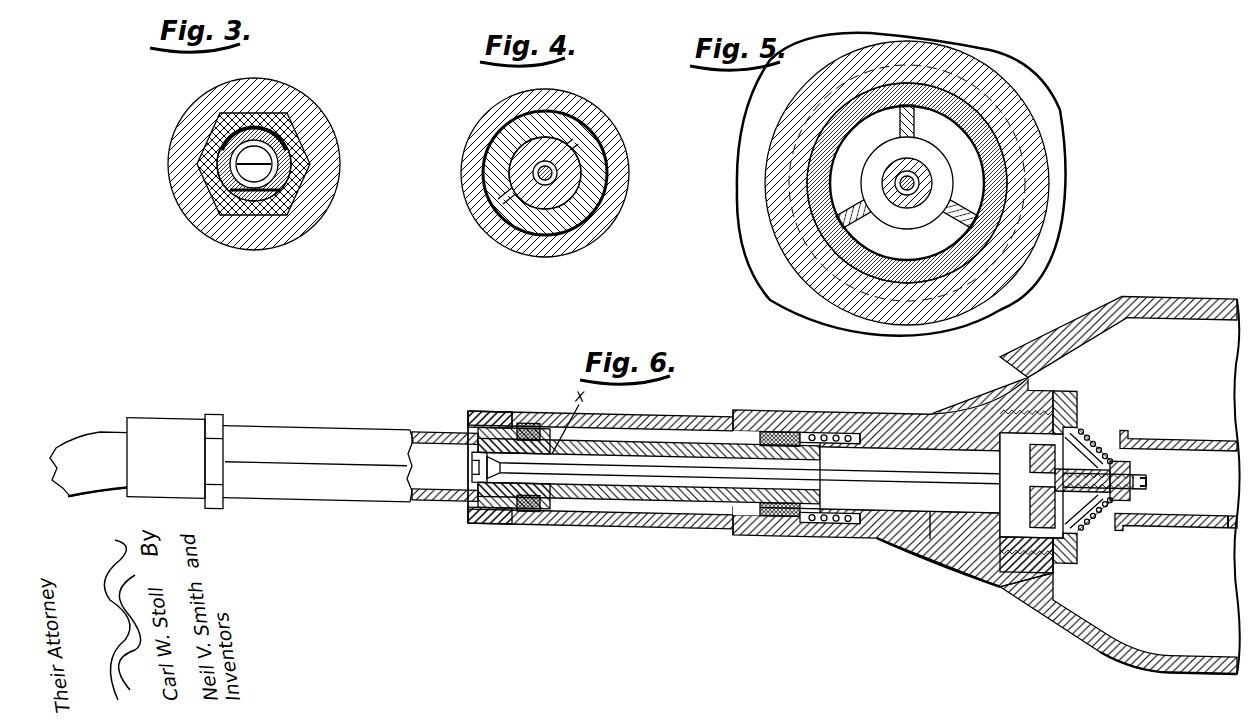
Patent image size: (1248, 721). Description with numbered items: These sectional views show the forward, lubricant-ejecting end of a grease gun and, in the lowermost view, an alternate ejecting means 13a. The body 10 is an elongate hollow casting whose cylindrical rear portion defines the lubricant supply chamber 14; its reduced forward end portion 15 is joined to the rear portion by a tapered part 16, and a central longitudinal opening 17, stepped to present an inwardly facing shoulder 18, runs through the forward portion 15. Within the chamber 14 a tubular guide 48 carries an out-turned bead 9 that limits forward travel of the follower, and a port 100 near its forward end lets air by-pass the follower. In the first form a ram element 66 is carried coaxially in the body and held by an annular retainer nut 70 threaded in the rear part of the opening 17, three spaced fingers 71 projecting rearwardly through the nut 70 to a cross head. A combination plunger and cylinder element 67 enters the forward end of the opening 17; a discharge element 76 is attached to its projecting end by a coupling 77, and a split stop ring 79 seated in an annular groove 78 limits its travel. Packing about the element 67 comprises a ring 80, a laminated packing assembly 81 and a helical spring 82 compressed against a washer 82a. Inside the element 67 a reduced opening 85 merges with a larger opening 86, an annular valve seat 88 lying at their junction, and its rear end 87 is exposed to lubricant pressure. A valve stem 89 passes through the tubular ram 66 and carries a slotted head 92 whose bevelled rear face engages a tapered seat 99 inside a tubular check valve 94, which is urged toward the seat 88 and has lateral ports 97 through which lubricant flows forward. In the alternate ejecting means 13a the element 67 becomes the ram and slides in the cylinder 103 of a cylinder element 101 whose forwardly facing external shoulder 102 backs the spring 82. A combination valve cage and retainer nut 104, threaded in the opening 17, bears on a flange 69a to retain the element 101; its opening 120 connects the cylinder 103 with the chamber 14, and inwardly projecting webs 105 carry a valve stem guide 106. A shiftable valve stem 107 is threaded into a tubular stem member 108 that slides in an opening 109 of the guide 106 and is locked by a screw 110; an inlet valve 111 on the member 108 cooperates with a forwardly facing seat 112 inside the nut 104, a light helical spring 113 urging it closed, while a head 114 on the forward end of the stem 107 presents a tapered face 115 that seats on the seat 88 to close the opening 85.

In FIG. 6, the out-turned bead 9 is at (1130, 430).
In FIG. 6, the body 10 is at (1142, 668).
In FIG. 6, the ejecting means 13a is at (918, 428).
In FIG. 6, the lubricant supply chamber 14 is at (1195, 303).
In FIG. 3, the forward end portion 15 is at (190, 111).
In FIG. 4, the forward end portion 15 is at (490, 120).
In FIG. 6, the forward end portion 15 is at (710, 522).
In FIG. 5, the tapered part 16 is at (1015, 93).
In FIG. 6, the tapered part 16 is at (1050, 607).
In FIG. 4, the central longitudinal opening 17 is at (498, 143).
In FIG. 6, the central longitudinal opening 17 is at (697, 441).
In FIG. 6, the shoulder 18 is at (985, 538).
In FIG. 6, the tubular guide 48 is at (1190, 516).
In FIG. 5, the ram element 66 is at (912, 196).
In FIG. 3, the plunger and cylinder element 67 is at (225, 187).
In FIG. 4, the plunger and cylinder element 67 is at (520, 183).
In FIG. 6, the plunger and cylinder element 67 is at (403, 430).
In FIG. 6, the flange 69a is at (1000, 392).
In FIG. 5, the retainer nut 70 is at (990, 218).
In FIG. 5, the fingers 71 is at (946, 190).
In FIG. 6, the discharge element 76 is at (85, 441).
In FIG. 6, the coupling 77 is at (158, 447).
In FIG. 4, the annular groove 78 is at (582, 133).
In FIG. 4, the split stop ring 79 is at (500, 200).
In FIG. 6, the split stop ring 79 is at (530, 426).
In FIG. 6, the ring 80 is at (770, 426).
In FIG. 6, the laminated packing assembly 81 is at (770, 514).
In FIG. 6, the helical spring 82 is at (835, 427).
In FIG. 6, the washer 82a is at (800, 520).
In FIG. 4, the reduced opening 85 is at (560, 170).
In FIG. 6, the reduced opening 85 is at (505, 505).
In FIG. 3, the larger opening 86 is at (217, 153).
In FIG. 6, the rear end 87 is at (822, 491).
In FIG. 6, the valve seat 88 is at (482, 420).
In FIG. 4, the valve stem 89 is at (575, 190).
In FIG. 5, the valve stem 89 is at (902, 170).
In FIG. 3, the head 92 is at (265, 175).
In FIG. 3, the tubular valve 94 is at (290, 163).
In FIG. 3, the lateral ports 97 is at (282, 135).
In FIG. 3, the seat 99 is at (236, 164).
In FIG. 6, the port 100 is at (1228, 516).
In FIG. 6, the cylinder element 101 is at (898, 515).
In FIG. 6, the external shoulder 102 is at (852, 520).
In FIG. 6, the cylinder 103 is at (930, 510).
In FIG. 6, the valve cage and retainer nut 104 is at (1078, 407).
In FIG. 6, the webs 105 is at (1085, 510).
In FIG. 6, the valve stem guide 106 is at (1130, 456).
In FIG. 6, the valve stem 107 is at (938, 473).
In FIG. 6, the tubular valve stem member 108 is at (1096, 440).
In FIG. 6, the opening 109 is at (1140, 480).
In FIG. 6, the screw 110 is at (1147, 470).
In FIG. 6, the inlet valve 111 is at (1030, 450).
In FIG. 6, the valve seat 112 is at (1070, 548).
In FIG. 6, the helical spring 113 is at (1108, 496).
In FIG. 6, the head 114 is at (470, 463).
In FIG. 6, the active face 115 is at (470, 477).
In FIG. 6, the opening 120 is at (1040, 552).